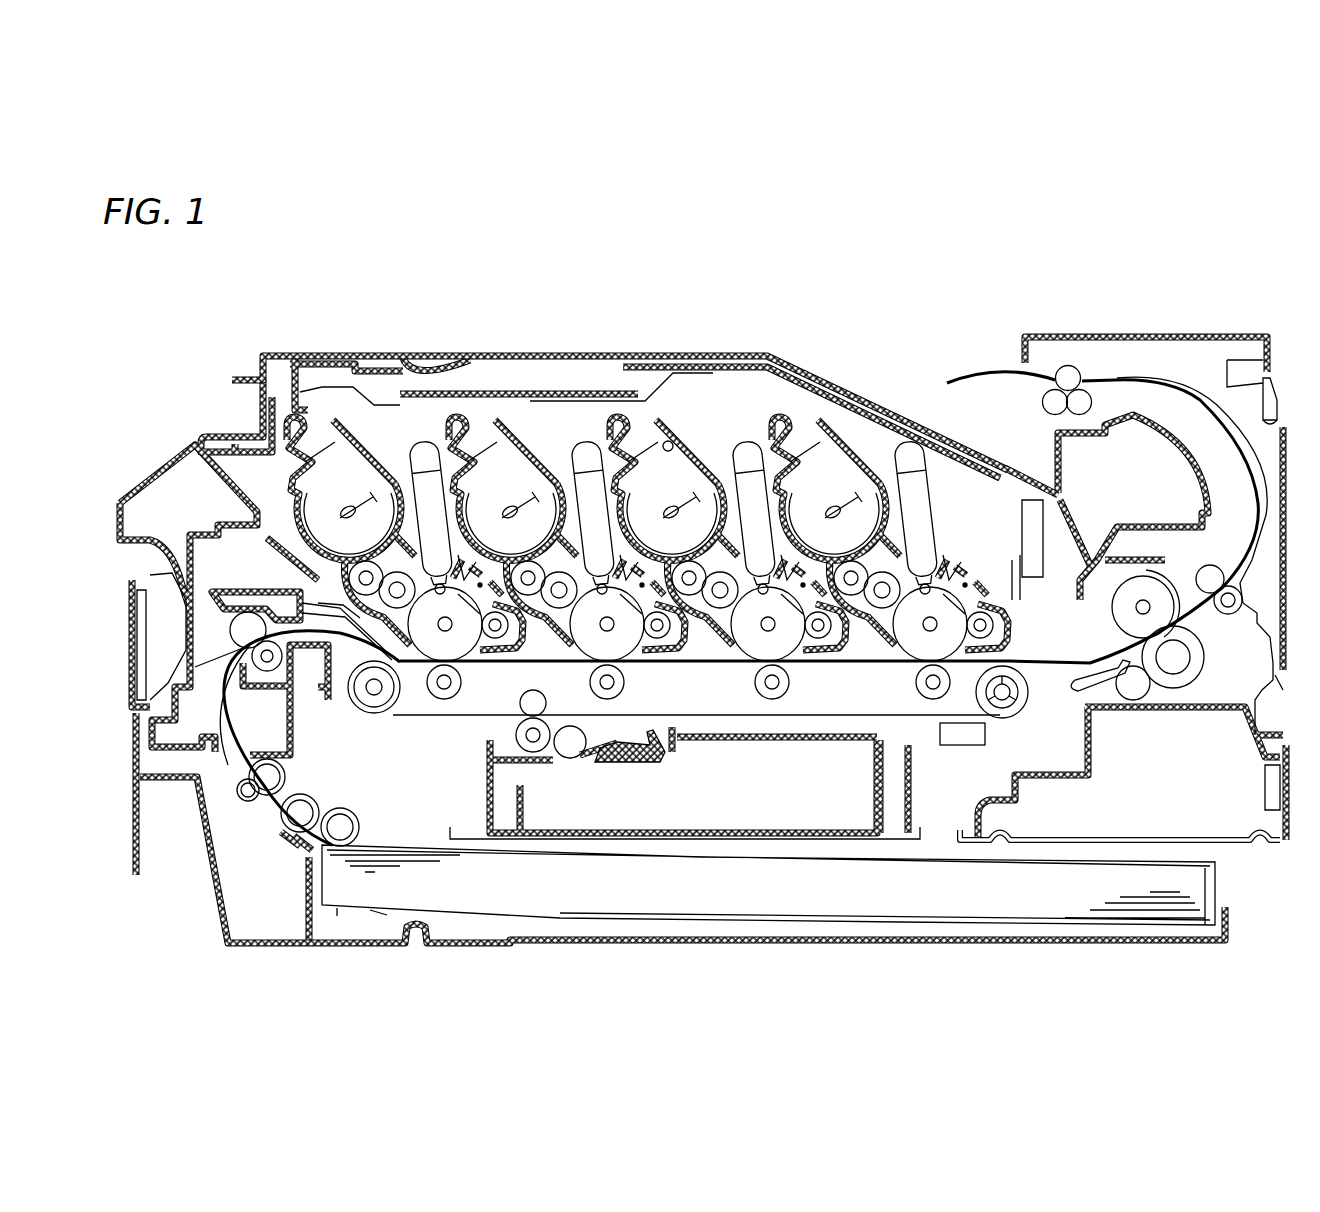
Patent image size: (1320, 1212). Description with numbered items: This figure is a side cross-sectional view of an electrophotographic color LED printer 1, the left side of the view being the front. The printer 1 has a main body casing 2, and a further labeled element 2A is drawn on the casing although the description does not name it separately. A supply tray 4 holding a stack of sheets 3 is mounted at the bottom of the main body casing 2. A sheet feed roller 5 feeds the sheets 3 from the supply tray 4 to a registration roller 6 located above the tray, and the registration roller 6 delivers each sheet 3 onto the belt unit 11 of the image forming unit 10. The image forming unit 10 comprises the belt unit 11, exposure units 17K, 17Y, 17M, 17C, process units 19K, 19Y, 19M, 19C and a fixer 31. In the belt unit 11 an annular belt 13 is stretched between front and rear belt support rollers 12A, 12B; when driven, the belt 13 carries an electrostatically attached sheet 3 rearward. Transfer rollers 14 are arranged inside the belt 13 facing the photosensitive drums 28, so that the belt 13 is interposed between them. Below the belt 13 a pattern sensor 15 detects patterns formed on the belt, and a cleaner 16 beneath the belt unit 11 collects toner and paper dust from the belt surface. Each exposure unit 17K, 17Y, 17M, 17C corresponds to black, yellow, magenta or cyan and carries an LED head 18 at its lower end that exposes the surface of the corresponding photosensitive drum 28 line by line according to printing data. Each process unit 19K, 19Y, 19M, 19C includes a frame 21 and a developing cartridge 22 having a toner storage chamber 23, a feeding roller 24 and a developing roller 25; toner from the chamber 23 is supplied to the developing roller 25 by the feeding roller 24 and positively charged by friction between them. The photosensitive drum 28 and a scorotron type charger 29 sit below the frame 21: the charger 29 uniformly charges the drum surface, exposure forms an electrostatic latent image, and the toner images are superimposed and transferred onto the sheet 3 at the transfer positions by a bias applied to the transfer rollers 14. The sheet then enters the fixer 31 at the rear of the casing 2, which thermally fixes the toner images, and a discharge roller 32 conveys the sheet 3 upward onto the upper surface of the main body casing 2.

The printer 1 is at (819, 272).
The main body casing 2 is at (1072, 336).
The cover 2A is at (265, 352).
The sheet 3 is at (1132, 874).
The supply tray 4 is at (1226, 918).
The sheet feed roller 5 is at (360, 829).
The registration roller 6 is at (267, 671).
The image forming unit 10 is at (440, 749).
The belt unit 11 is at (371, 747).
The belt support roller 12A is at (356, 705).
The belt support roller 12B is at (1020, 706).
The belt 13 is at (393, 718).
The transfer roller 14 is at (771, 700).
The pattern sensor 15 is at (957, 746).
The cleaner 16 is at (763, 838).
The exposure unit 17K is at (421, 440).
The exposure unit 17Y is at (583, 440).
The exposure unit 17M is at (746, 440).
The exposure unit 17C is at (908, 440).
The LED head 18 is at (760, 597).
The process unit 19K is at (316, 388).
The process unit 19Y is at (472, 394).
The process unit 19M is at (651, 403).
The process unit 19C is at (814, 403).
The frame 21 is at (632, 400).
The developing cartridge 22 is at (668, 428).
The toner storage chamber 23 is at (671, 444).
The feeding roller 24 is at (658, 639).
The developing roller 25 is at (712, 604).
The photosensitive drum 28 is at (785, 648).
The scorotron type charger 29 is at (832, 624).
The fixer 31 is at (1084, 628).
The discharge roller 32 is at (1082, 380).